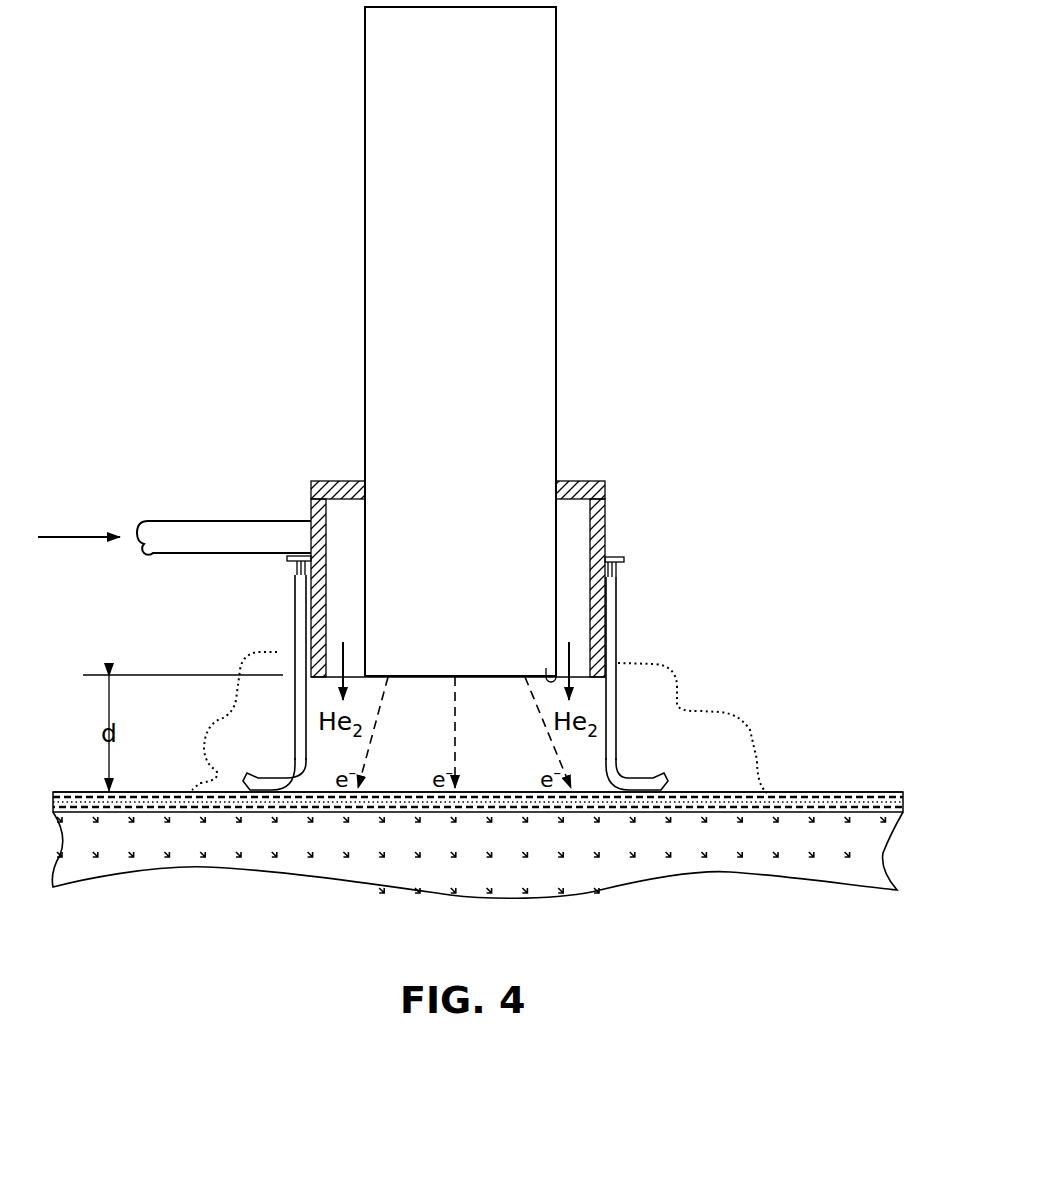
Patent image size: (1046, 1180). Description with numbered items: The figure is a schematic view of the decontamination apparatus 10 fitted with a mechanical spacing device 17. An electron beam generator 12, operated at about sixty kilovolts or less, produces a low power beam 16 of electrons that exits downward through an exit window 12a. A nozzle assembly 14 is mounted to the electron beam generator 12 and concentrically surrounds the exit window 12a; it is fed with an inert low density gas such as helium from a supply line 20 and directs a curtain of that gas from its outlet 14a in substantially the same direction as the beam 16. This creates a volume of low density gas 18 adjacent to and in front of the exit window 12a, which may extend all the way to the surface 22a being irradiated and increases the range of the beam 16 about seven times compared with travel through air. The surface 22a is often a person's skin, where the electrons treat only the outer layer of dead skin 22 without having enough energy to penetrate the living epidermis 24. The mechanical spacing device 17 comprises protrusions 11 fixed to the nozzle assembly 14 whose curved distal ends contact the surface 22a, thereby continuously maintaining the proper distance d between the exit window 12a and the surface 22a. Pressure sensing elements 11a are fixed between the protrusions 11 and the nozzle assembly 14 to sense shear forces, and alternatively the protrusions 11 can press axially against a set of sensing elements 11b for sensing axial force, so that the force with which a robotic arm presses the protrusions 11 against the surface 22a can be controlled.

The decontamination apparatus 10 is at (687, 150).
The electron beam generator 12 is at (538, 222).
The exit window 12a is at (422, 678).
The nozzle assembly 14 is at (605, 504).
The outlet 14a is at (549, 676).
The protrusions 11 is at (297, 603).
The pressure sensing elements 11a is at (300, 625).
The sensing elements 11b is at (297, 566).
The beam of electrons 16 is at (578, 768).
The mechanical spacing device 17 is at (692, 640).
The volume of low density gas 18 is at (223, 712).
The supply line 20 is at (213, 522).
The outer layer of dead skin 22 is at (803, 793).
The surface 22a is at (490, 791).
The living epidermis 24 is at (810, 873).